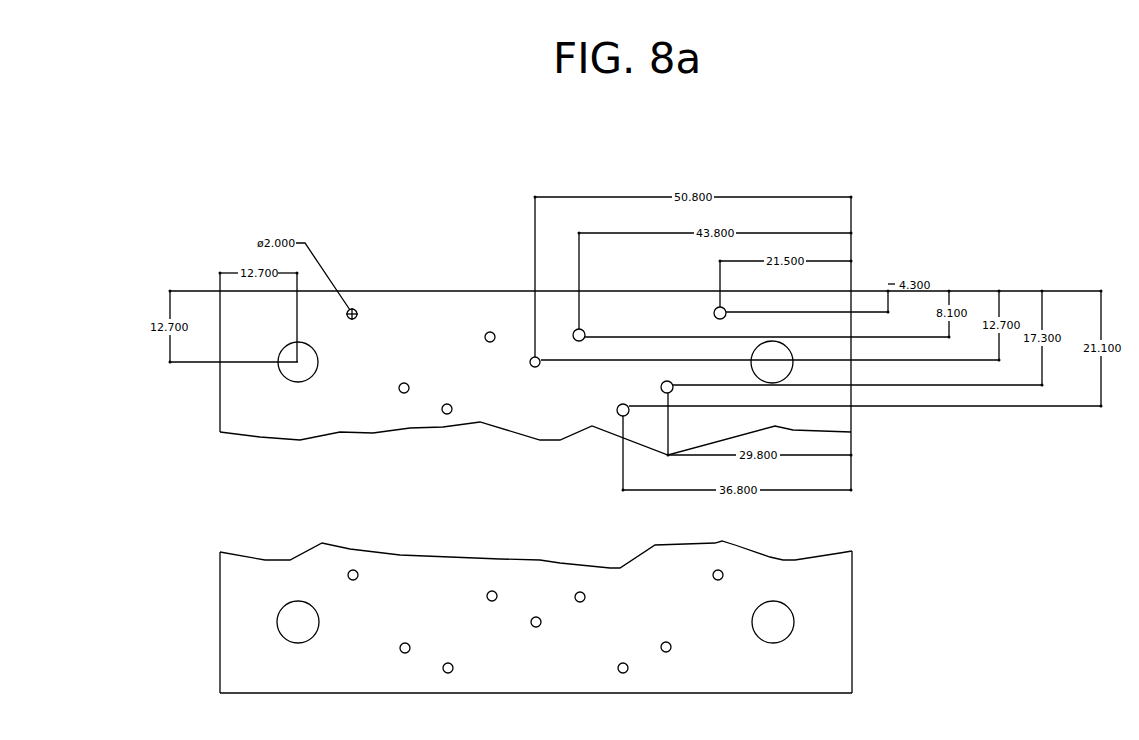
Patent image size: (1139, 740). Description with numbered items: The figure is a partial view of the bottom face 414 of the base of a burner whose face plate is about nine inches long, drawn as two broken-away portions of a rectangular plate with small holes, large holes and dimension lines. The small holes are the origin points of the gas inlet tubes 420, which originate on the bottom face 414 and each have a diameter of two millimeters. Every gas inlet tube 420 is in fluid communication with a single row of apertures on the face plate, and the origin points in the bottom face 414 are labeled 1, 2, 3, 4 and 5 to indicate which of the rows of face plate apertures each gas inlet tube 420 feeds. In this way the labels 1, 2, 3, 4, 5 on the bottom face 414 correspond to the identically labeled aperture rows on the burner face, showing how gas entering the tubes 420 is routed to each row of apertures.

The bottom face 414 is at (243, 590).
The gas inlet tubes 420 is at (528, 374).
The row one gas inlet tube origin point 1 is at (537, 494).
The row two gas inlet tube origin point 2 is at (542, 464).
The row three gas inlet tube origin point 3 is at (542, 538).
The row four gas inlet tube origin point 4 is at (543, 514).
The row five gas inlet tube origin point 5 is at (538, 451).